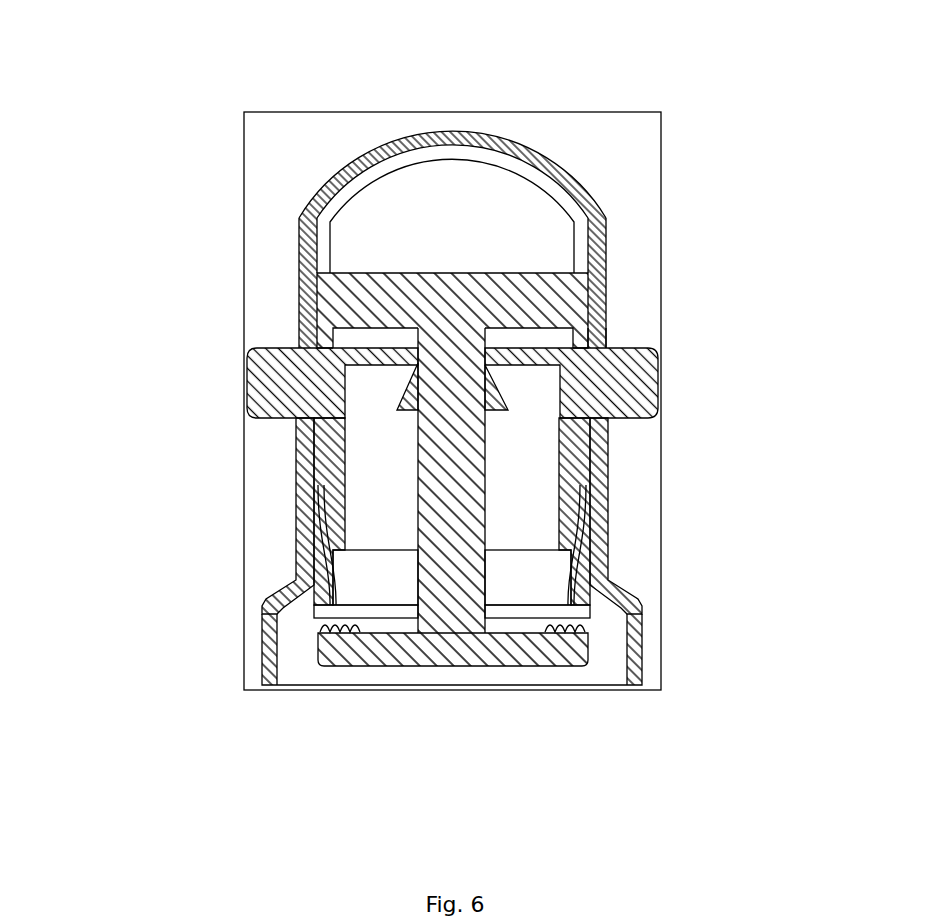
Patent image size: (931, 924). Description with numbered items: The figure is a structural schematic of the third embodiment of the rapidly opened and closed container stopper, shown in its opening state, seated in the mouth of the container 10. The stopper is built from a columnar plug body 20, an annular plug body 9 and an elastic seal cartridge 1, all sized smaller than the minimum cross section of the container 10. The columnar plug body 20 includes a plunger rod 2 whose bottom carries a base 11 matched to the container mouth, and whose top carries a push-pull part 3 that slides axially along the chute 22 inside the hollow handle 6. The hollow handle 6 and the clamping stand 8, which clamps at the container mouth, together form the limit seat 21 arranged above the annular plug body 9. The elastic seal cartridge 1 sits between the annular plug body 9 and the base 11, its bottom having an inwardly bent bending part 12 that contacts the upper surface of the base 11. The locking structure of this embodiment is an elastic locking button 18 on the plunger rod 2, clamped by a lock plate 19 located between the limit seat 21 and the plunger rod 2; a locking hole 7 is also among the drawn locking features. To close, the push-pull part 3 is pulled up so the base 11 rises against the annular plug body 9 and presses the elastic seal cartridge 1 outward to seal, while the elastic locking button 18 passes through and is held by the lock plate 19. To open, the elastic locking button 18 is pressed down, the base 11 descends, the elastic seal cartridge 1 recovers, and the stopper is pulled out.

The elastic seal cartridge 1 is at (582, 533).
The plunger rod 2 is at (428, 487).
The push-pull part 3 is at (380, 300).
The hollow handle 6 is at (548, 155).
The locking hole 7 is at (597, 233).
The clamping stand 8 is at (657, 378).
The annular plug body 9 is at (573, 458).
The container 10 is at (262, 650).
The base 11 is at (415, 660).
The bending part 12 is at (567, 620).
The elastic locking button 18 is at (397, 410).
The lock plate 19 is at (378, 355).
The columnar plug body 20 is at (418, 605).
The limit seat 21 is at (607, 332).
The chute 22 is at (325, 227).